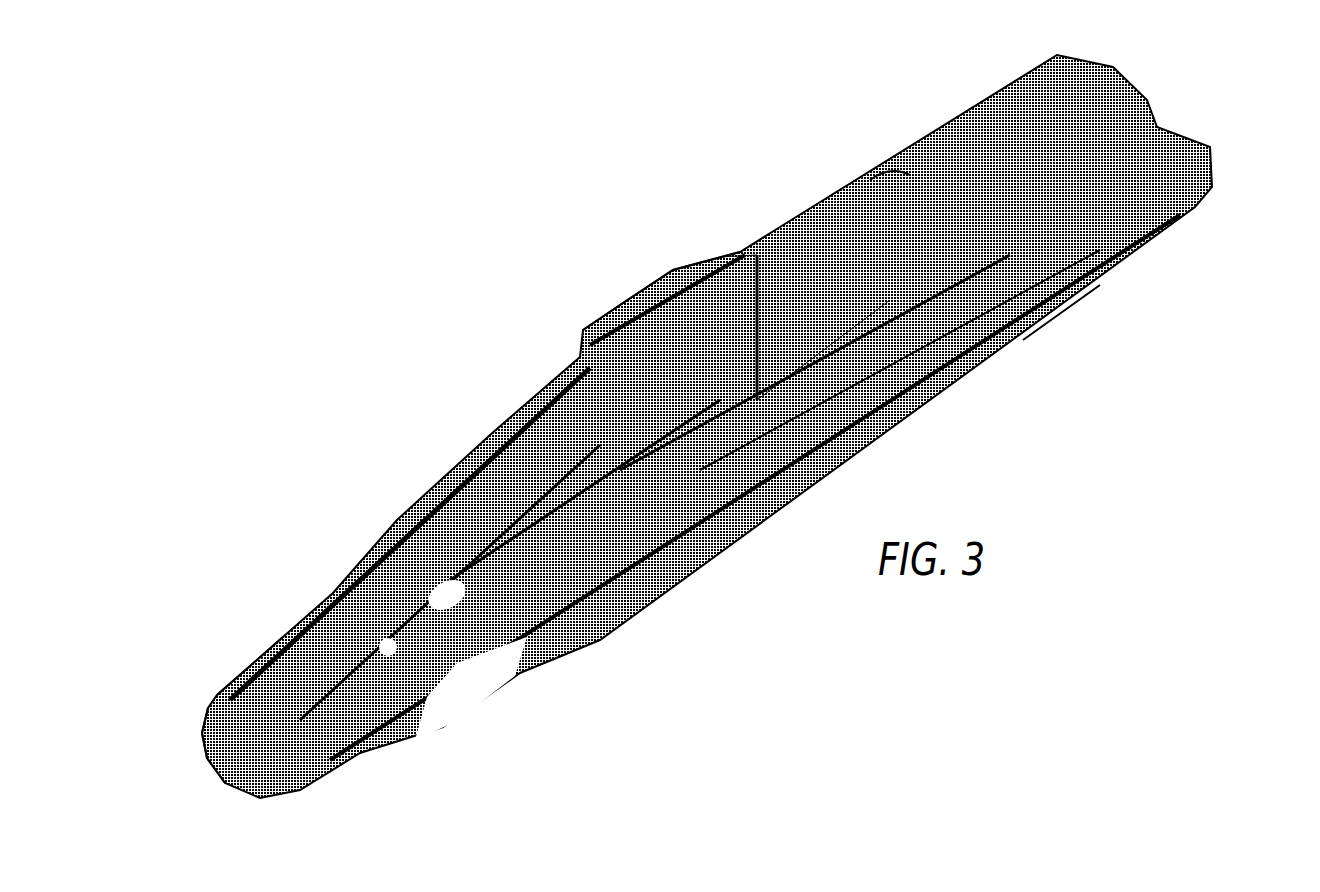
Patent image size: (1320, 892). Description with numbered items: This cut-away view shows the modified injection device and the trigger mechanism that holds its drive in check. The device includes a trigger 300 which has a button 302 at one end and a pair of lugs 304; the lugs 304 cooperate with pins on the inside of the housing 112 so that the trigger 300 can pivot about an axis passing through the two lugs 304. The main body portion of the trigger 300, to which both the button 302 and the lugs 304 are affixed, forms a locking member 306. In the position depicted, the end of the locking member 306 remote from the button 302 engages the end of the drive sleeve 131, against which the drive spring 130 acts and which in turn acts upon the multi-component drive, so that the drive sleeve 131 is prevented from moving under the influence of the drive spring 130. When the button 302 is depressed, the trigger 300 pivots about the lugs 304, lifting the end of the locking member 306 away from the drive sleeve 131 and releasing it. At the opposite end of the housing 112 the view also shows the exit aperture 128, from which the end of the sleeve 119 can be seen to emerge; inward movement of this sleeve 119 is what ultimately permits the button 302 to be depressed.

The housing 112 is at (580, 637).
The sleeve 119 is at (217, 693).
The exit aperture 128 is at (228, 750).
The drive spring 130 is at (1143, 100).
The drive sleeve 131 is at (890, 173).
The trigger 300 is at (778, 222).
The button 302 is at (630, 313).
The lugs 304 is at (720, 257).
The locking member 306 is at (987, 280).